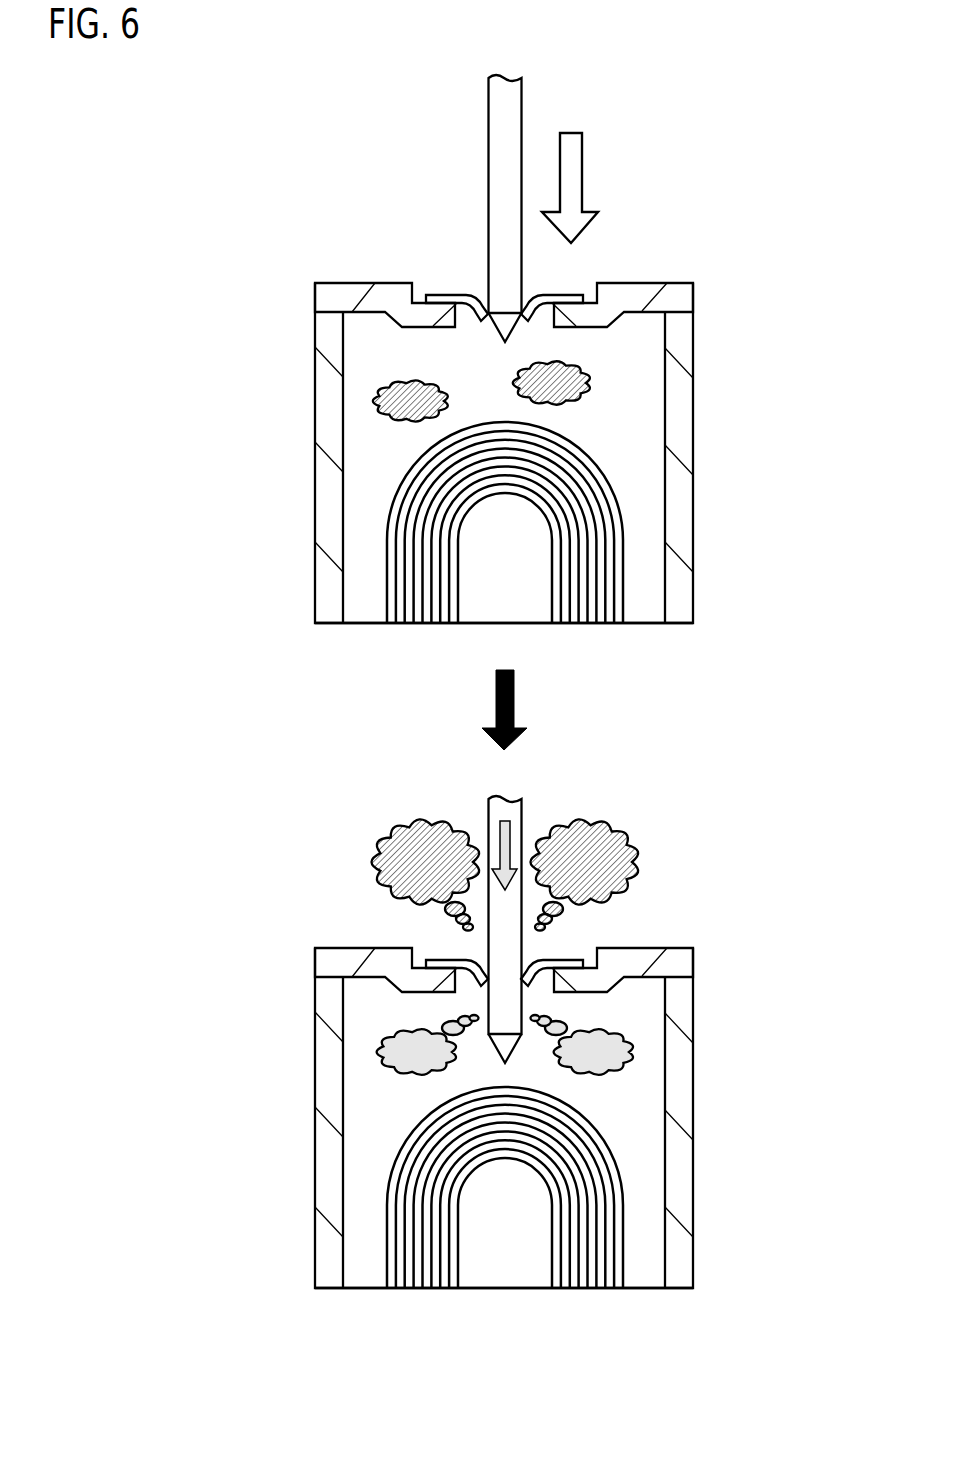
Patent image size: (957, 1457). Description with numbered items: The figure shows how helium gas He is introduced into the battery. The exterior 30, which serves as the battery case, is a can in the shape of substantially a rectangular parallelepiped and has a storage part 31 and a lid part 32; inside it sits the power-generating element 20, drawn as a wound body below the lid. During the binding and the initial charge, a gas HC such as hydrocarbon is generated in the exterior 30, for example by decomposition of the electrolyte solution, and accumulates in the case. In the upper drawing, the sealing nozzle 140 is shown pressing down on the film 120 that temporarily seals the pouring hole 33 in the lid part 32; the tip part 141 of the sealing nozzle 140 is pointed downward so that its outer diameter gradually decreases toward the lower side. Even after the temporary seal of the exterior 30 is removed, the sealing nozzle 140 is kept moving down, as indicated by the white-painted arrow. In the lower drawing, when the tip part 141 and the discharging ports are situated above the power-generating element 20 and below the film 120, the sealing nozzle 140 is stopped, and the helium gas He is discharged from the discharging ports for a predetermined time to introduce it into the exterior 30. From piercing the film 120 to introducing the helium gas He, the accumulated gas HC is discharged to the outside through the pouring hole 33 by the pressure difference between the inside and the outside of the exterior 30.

The power-generating element 20 is at (583, 456).
The exterior 30 is at (302, 468).
The storage part 31 is at (323, 506).
The lid part 32 is at (357, 292).
The pouring hole 33 is at (545, 327).
The film 120 is at (576, 297).
The sealing nozzle 140 is at (497, 112).
The tip part 141 is at (494, 332).
The gas HC is at (378, 403).
The helium gas He is at (522, 838).